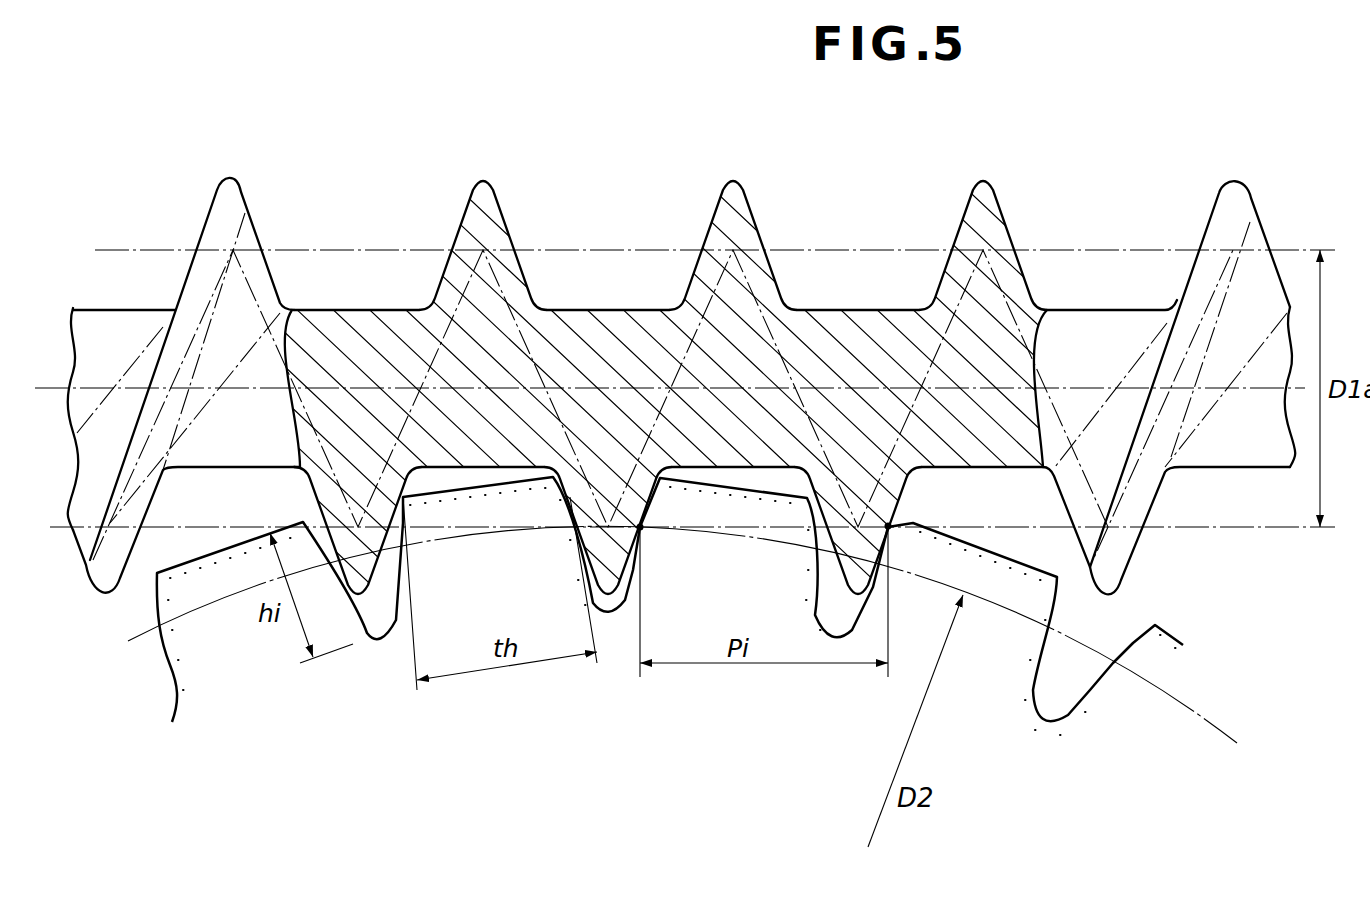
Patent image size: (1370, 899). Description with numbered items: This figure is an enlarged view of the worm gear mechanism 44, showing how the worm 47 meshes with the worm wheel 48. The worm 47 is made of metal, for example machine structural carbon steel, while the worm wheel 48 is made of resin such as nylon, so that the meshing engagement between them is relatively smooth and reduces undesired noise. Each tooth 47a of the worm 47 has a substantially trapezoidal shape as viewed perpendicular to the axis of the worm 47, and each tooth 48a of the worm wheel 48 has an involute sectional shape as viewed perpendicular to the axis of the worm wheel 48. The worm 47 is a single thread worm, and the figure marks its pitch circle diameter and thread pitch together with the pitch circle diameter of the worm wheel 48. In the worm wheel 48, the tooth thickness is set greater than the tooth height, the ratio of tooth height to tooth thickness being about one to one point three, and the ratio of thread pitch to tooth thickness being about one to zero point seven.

The worm gear mechanism 44 is at (1146, 130).
The worm 47 is at (1253, 153).
The tooth of the worm 47a is at (723, 192).
The worm wheel 48 is at (1222, 662).
The tooth of the worm wheel 48a is at (193, 660).